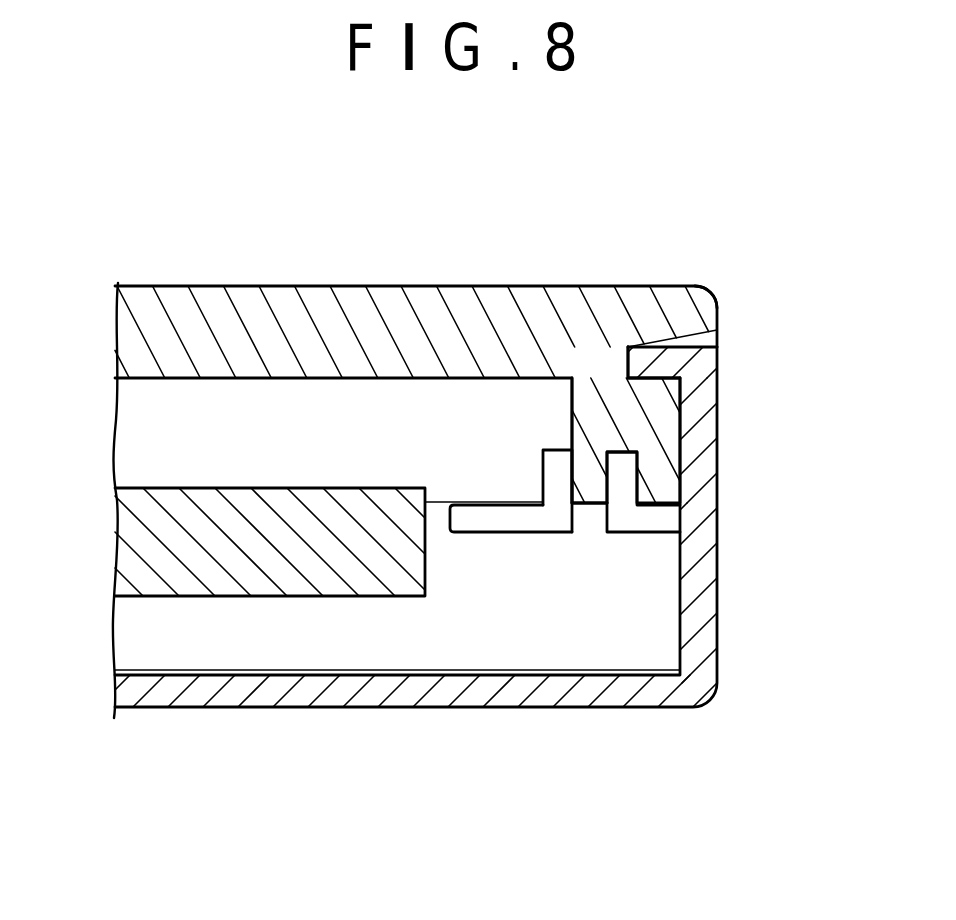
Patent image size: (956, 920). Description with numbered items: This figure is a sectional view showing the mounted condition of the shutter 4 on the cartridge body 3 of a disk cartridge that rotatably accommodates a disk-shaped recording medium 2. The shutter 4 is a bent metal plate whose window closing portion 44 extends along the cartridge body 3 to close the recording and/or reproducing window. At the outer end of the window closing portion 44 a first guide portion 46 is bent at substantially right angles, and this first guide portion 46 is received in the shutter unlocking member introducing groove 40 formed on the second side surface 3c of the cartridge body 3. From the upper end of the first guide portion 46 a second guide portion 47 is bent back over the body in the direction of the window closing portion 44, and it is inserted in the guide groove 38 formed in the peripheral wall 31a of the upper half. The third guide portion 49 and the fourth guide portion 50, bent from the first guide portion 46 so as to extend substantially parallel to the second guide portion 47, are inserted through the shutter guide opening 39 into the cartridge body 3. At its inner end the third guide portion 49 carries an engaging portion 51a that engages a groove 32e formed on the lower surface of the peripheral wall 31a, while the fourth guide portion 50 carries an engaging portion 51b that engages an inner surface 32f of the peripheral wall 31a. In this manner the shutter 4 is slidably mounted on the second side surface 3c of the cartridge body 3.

The recording medium 2 is at (146, 481).
The cartridge body 3 is at (291, 274).
The second side surface 3c is at (718, 310).
The shutter 4 is at (742, 507).
The peripheral wall 31a is at (602, 367).
The groove 32e is at (600, 487).
The inner surface 32f is at (572, 413).
The guide groove 38 is at (650, 346).
The shutter guide opening 39 is at (670, 650).
The shutter unlocking member introducing groove 40 is at (698, 417).
The window closing portion 44 is at (459, 707).
The first guide portion 46 is at (705, 545).
The second guide portion 47 is at (652, 365).
The third guide portion 49 is at (643, 527).
The fourth guide portion 50 is at (498, 525).
The engaging portion 51a is at (640, 470).
The engaging portion 51b is at (543, 470).